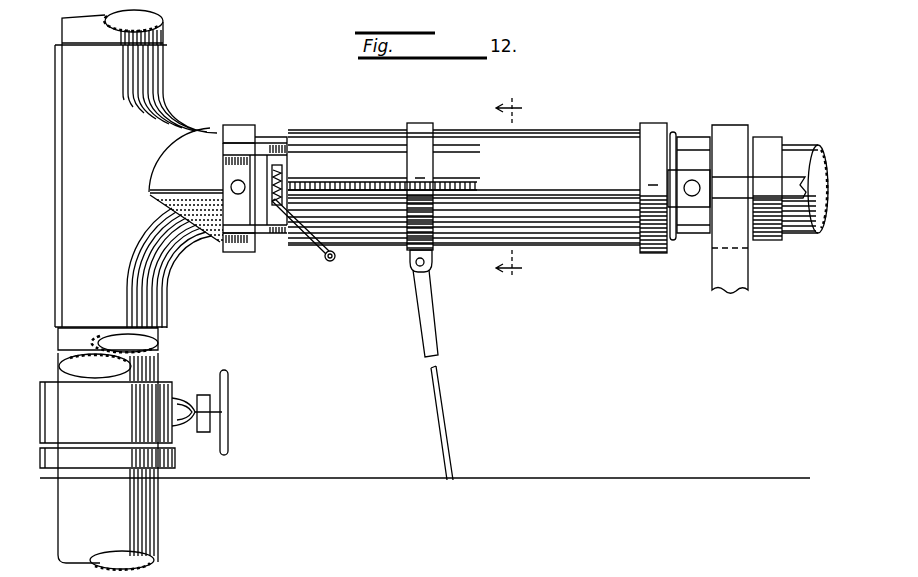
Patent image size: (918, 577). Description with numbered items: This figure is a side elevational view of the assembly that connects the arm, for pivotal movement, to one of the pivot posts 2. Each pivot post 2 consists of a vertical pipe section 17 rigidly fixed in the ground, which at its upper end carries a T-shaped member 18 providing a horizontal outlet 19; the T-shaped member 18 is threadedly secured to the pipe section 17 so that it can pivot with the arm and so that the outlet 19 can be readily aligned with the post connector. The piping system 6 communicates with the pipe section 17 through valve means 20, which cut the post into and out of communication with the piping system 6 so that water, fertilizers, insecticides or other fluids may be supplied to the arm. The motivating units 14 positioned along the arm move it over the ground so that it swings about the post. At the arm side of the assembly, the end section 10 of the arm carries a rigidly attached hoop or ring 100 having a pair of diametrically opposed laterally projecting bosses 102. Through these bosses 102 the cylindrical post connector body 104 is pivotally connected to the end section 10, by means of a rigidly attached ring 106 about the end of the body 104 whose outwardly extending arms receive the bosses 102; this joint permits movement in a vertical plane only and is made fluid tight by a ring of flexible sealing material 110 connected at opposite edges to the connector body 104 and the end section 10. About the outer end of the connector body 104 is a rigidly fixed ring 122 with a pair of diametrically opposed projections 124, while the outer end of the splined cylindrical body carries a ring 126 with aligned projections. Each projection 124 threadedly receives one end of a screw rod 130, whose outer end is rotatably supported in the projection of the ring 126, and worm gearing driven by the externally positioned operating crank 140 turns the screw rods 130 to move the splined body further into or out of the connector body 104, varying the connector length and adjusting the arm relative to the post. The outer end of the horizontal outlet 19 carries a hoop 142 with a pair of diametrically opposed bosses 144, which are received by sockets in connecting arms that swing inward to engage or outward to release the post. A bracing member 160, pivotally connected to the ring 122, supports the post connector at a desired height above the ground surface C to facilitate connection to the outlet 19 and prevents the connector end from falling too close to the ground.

The pivot post 2 is at (188, 48).
The piping system 6 is at (175, 460).
The end section 10 is at (805, 145).
The motivating unit 14 is at (509, 187).
The vertical pipe section 17 is at (162, 523).
The T-shaped member 18 is at (167, 278).
The horizontal outlet 19 is at (218, 243).
The valve means 20 is at (229, 413).
The hoop or ring 100 is at (693, 137).
The bosses 102 is at (692, 197).
The post connector body 104 is at (557, 133).
The ring 106 is at (648, 127).
The ring of flexible sealing material 110 is at (673, 132).
The ring 122 is at (408, 130).
The projections 124 is at (405, 177).
The ring 126 is at (270, 137).
The screw rod 130 is at (333, 182).
The operating crank 140 is at (325, 259).
The hoop 142 is at (229, 125).
The bosses 144 is at (240, 196).
The bracing member 160 is at (447, 392).
The surface C is at (558, 478).